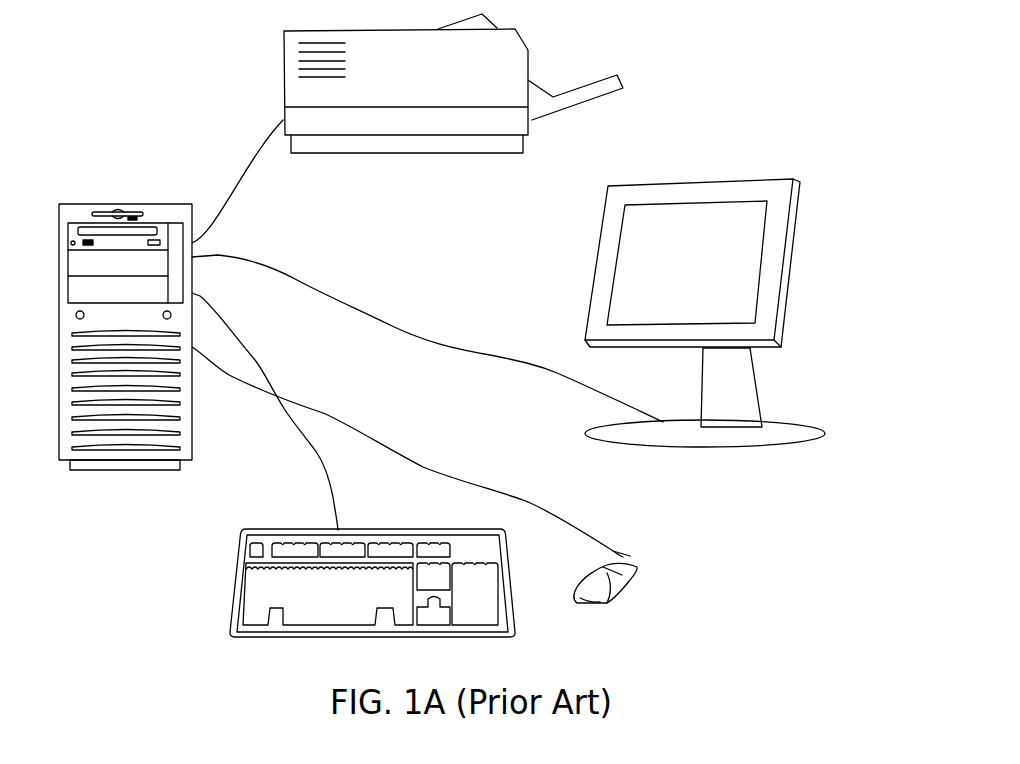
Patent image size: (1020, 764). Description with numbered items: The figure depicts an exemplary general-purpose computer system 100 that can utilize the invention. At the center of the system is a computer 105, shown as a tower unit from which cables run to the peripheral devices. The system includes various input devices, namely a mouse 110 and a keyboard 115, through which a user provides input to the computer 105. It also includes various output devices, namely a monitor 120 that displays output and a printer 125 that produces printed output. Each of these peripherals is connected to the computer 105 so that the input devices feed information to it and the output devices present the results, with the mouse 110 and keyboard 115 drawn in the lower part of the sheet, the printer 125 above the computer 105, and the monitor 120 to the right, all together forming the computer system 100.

The general-purpose computer system 100 is at (172, 57).
The computer 105 is at (75, 203).
The mouse 110 is at (637, 574).
The keyboard 115 is at (232, 567).
The monitor 120 is at (717, 178).
The printer 125 is at (527, 50).